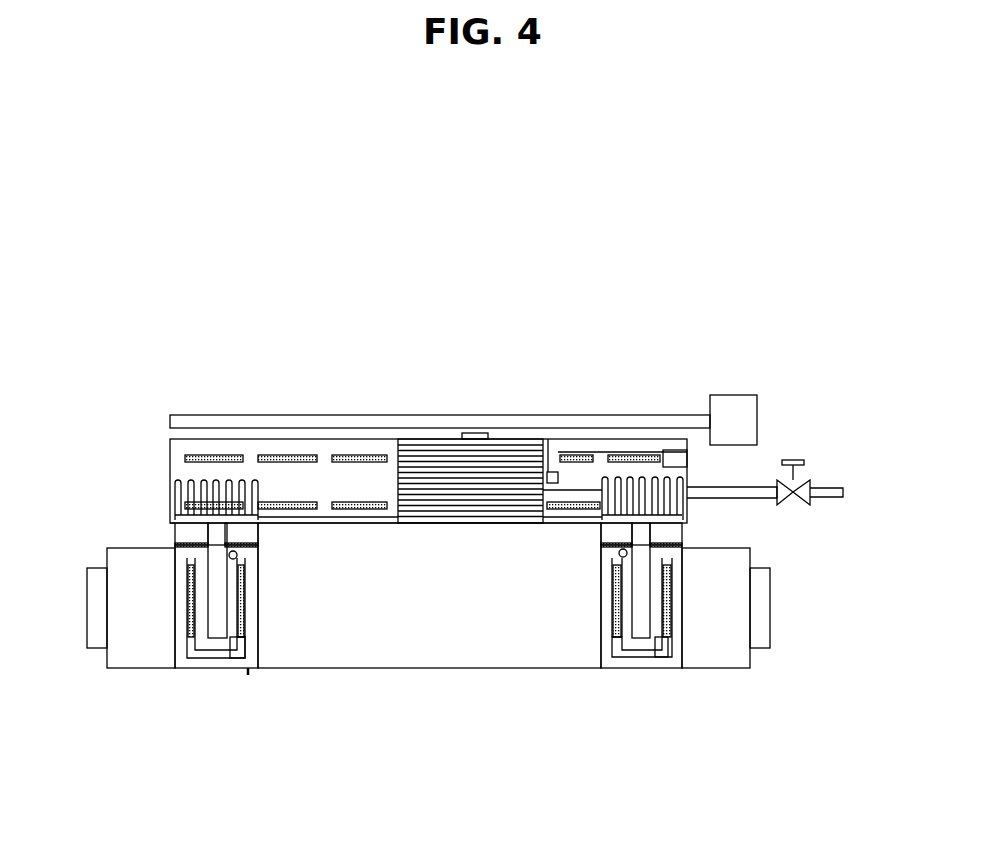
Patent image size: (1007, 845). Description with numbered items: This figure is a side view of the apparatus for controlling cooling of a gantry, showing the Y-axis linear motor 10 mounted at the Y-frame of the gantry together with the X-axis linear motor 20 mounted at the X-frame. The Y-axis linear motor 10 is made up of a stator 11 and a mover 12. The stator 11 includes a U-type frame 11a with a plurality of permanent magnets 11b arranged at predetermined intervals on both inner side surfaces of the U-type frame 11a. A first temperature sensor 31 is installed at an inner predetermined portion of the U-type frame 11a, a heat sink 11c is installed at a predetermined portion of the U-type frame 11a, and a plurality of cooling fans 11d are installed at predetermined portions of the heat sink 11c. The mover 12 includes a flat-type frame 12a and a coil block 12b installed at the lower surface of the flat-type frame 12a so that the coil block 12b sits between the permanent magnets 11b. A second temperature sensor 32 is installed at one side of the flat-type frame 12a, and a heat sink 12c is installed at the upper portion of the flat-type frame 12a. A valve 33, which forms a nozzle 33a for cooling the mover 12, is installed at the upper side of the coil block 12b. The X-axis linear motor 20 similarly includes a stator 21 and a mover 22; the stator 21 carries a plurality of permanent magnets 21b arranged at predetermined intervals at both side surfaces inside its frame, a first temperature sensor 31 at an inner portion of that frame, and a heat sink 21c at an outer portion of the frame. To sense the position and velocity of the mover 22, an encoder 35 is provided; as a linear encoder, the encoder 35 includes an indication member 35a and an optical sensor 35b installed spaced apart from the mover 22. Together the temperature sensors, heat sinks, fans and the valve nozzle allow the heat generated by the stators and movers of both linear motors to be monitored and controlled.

The Y-axis linear motor 10 is at (439, 647).
The stator 11 is at (439, 650).
The U-type frame 11a is at (208, 672).
The permanent magnets 11b is at (245, 600).
The heat sink 11c is at (140, 668).
The cooling fans 11d is at (95, 650).
The mover 12 is at (430, 549).
The flat-type frame 12a is at (185, 540).
The coil block 12b is at (218, 607).
The heat sink 12c is at (178, 490).
The X-axis linear motor 20 is at (493, 548).
The stator 21 is at (330, 415).
The permanent magnets 21b is at (643, 450).
The heat sink 21c is at (415, 512).
The mover 22 is at (457, 526).
The first temperature sensor 31 is at (680, 456).
The second temperature sensor 32 is at (565, 415).
The valve 33 is at (794, 458).
The nozzle 33a is at (240, 556).
The encoder 35 is at (470, 456).
The indication member 35a is at (425, 415).
The optical sensor 35b is at (479, 415).